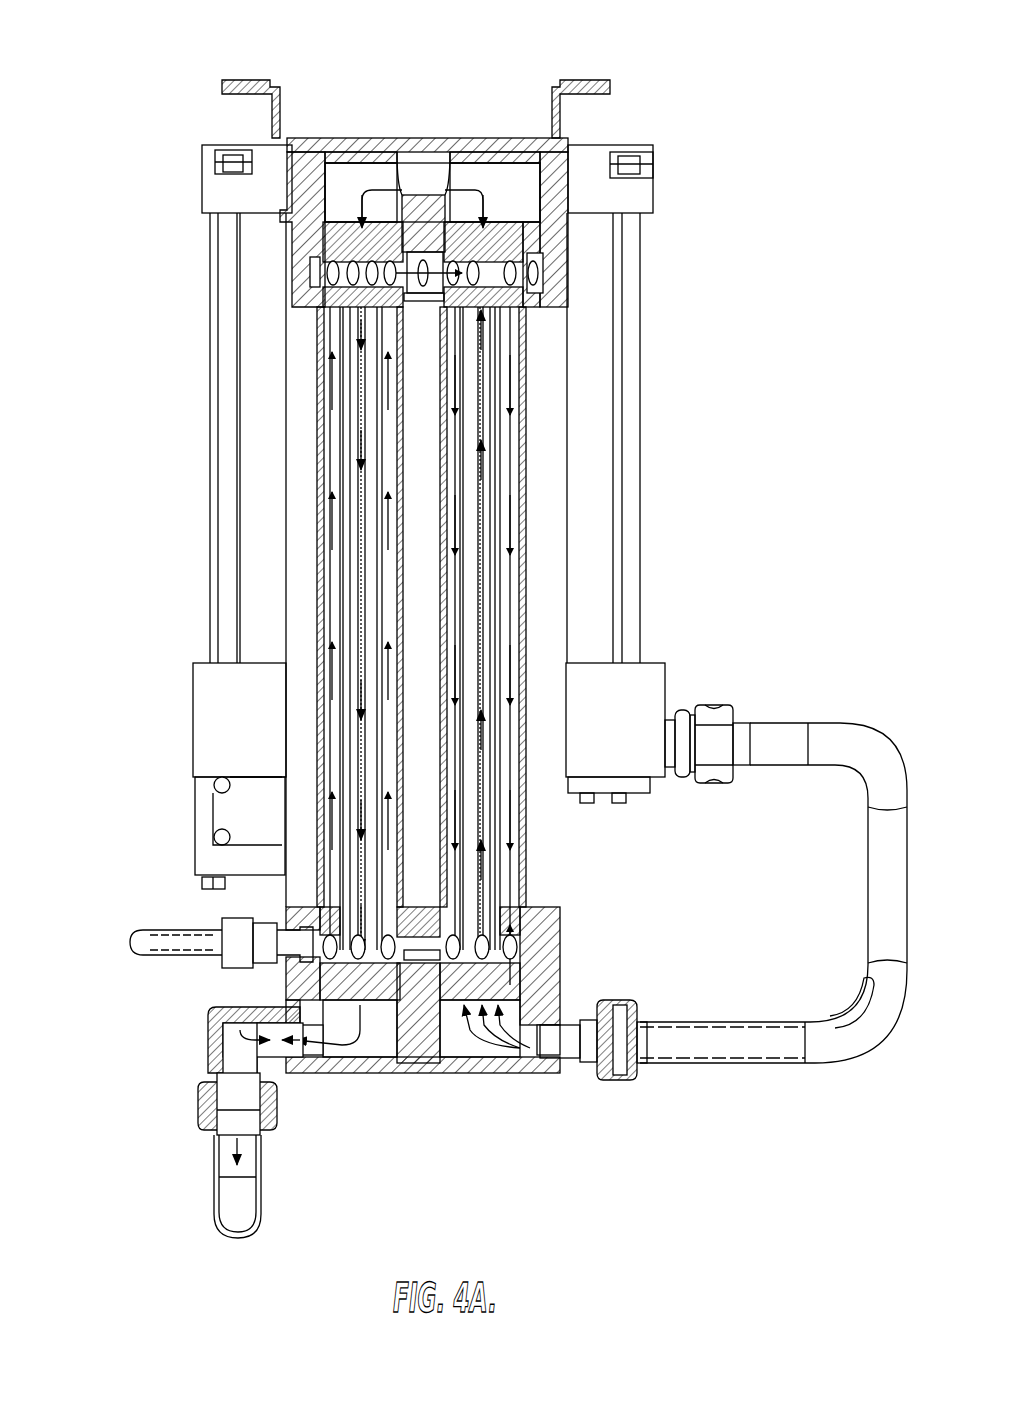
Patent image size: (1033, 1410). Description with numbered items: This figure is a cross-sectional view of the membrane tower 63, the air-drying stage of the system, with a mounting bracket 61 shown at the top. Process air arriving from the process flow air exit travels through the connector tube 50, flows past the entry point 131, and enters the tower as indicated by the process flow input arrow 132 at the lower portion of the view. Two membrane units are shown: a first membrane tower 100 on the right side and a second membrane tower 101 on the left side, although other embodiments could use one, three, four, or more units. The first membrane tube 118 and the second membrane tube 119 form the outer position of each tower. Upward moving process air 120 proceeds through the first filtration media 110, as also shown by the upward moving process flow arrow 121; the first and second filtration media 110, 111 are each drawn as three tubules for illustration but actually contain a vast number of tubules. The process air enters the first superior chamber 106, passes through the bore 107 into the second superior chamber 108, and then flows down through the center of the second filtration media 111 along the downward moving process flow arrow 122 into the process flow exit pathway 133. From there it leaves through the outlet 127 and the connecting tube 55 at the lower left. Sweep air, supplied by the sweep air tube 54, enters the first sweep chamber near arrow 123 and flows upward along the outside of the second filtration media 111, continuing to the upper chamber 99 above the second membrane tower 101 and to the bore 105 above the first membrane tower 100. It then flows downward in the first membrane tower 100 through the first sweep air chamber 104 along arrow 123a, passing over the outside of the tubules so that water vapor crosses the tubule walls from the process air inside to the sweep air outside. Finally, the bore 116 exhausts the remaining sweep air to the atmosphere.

The connector tube 50 is at (833, 737).
The sweep air tube 54 is at (186, 937).
The connecting tube 55 is at (208, 1213).
The mounting bracket 61 is at (262, 84).
The membrane tower 63 is at (757, 93).
The upper chamber 99 is at (312, 277).
The first membrane tower 100 is at (527, 613).
The second membrane tower 101 is at (316, 640).
The first sweep air chamber 104 is at (515, 323).
The bore 105 is at (532, 258).
The first superior chamber 106 is at (489, 184).
The bore 107 is at (430, 176).
The second superior chamber 108 is at (352, 184).
The first filtration media 110 is at (470, 547).
The second filtration media 111 is at (387, 640).
The bore 116 is at (538, 940).
The first membrane tube 118 is at (487, 479).
The second membrane tube 119 is at (320, 533).
The upward moving process air 120 is at (484, 884).
The upward moving process flow arrow 121 is at (530, 480).
The downward moving process flow arrow 122 is at (362, 432).
The sweep air entry arrow 123 is at (322, 808).
The sweep air downward flow arrow 123a is at (515, 358).
The outlet 127 is at (278, 1040).
The entry point 131 is at (570, 1043).
The process flow input arrow 132 is at (522, 1045).
The process flow exit pathway 133 is at (214, 1133).